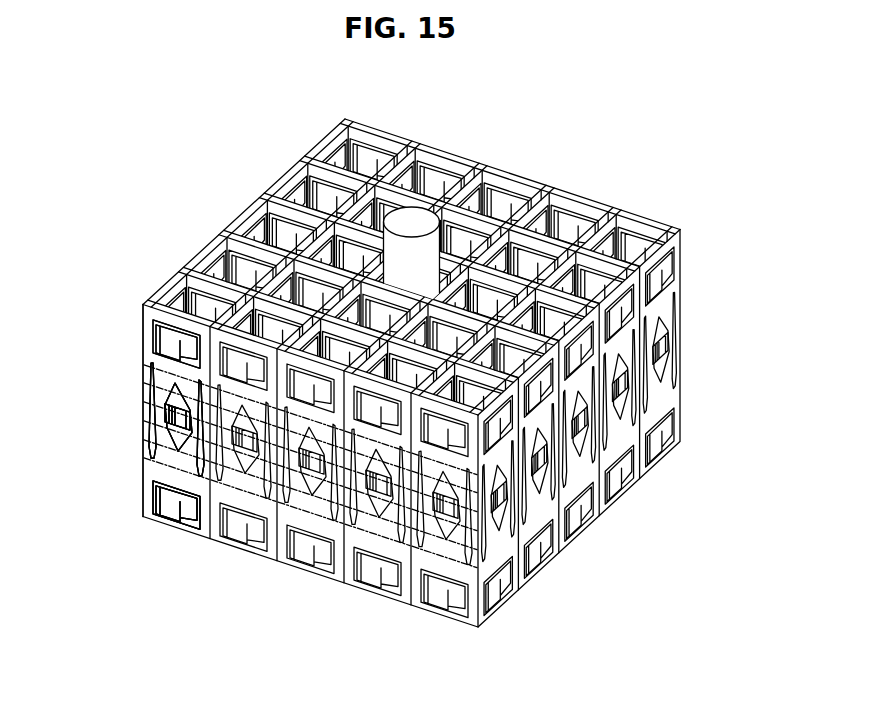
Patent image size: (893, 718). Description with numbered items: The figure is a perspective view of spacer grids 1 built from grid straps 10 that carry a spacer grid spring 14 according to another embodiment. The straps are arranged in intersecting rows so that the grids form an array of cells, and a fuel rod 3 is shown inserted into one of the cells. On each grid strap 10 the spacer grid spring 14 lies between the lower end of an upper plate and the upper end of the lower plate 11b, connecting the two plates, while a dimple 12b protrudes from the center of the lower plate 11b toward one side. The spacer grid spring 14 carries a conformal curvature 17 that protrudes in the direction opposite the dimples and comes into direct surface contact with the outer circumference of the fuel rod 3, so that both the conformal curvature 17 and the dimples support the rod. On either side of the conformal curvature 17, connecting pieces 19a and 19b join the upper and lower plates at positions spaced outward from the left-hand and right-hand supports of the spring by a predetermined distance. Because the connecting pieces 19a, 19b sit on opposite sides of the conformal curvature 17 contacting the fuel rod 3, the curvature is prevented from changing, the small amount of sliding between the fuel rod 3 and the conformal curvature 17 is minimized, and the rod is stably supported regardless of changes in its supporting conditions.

The spacer grids 1 is at (718, 190).
The fuel rod 3 is at (413, 216).
The grid strap 10 is at (124, 468).
The lower plate 11b is at (147, 487).
The dimple 12b is at (172, 507).
The spacer grid spring 14 is at (163, 438).
The conformal curvature 17 is at (165, 407).
The connecting piece 19a is at (146, 392).
The connecting piece 19b is at (203, 440).